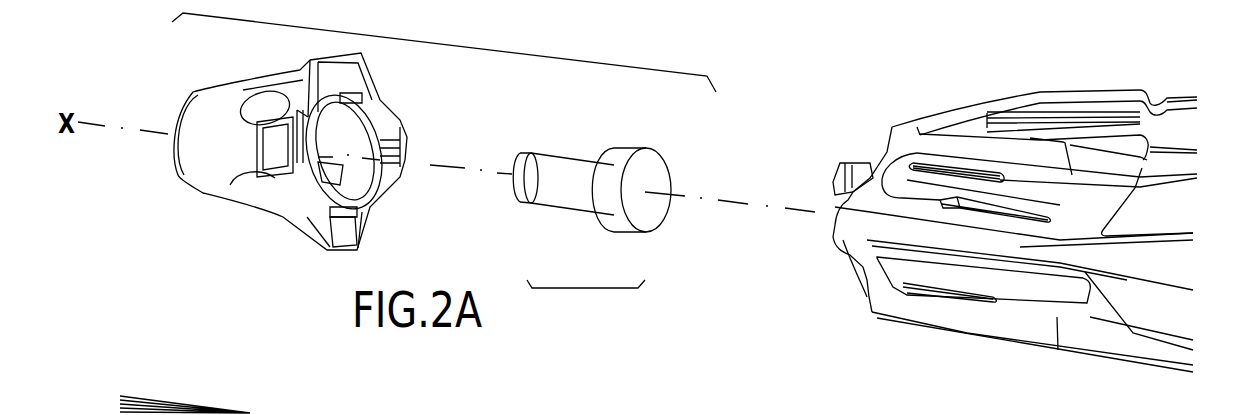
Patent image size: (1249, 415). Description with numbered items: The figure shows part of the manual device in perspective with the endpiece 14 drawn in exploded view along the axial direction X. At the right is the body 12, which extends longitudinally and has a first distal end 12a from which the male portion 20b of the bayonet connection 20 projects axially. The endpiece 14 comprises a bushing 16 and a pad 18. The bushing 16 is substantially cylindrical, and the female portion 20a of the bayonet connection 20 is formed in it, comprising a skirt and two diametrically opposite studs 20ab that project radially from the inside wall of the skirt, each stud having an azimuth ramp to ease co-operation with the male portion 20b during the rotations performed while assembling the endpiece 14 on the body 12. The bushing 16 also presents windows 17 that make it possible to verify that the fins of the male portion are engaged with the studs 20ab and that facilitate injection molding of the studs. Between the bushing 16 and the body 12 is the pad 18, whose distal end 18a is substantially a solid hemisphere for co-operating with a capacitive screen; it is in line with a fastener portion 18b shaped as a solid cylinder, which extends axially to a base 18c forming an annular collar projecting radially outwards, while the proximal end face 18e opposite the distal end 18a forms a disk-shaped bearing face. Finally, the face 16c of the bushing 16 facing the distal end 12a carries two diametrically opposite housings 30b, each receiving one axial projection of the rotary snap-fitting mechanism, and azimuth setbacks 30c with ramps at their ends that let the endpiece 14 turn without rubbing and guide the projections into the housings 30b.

The body 12 is at (983, 345).
The first distal end 12a is at (872, 293).
The endpiece 14 is at (470, 27).
The bushing 16 is at (199, 196).
The face of the endpiece 16c is at (358, 227).
The windows 17 is at (267, 118).
The pad 18 is at (604, 150).
The distal end 18a is at (518, 167).
The fastener portion 18b is at (567, 160).
The base 18c is at (632, 150).
The proximal end face 18e is at (657, 170).
The bayonet connection 20 is at (587, 290).
The female portion 20a is at (358, 172).
The studs 20ab is at (318, 160).
The male portion 20b is at (800, 236).
The housings 30b is at (352, 92).
The azimuth setbacks 30c is at (390, 150).